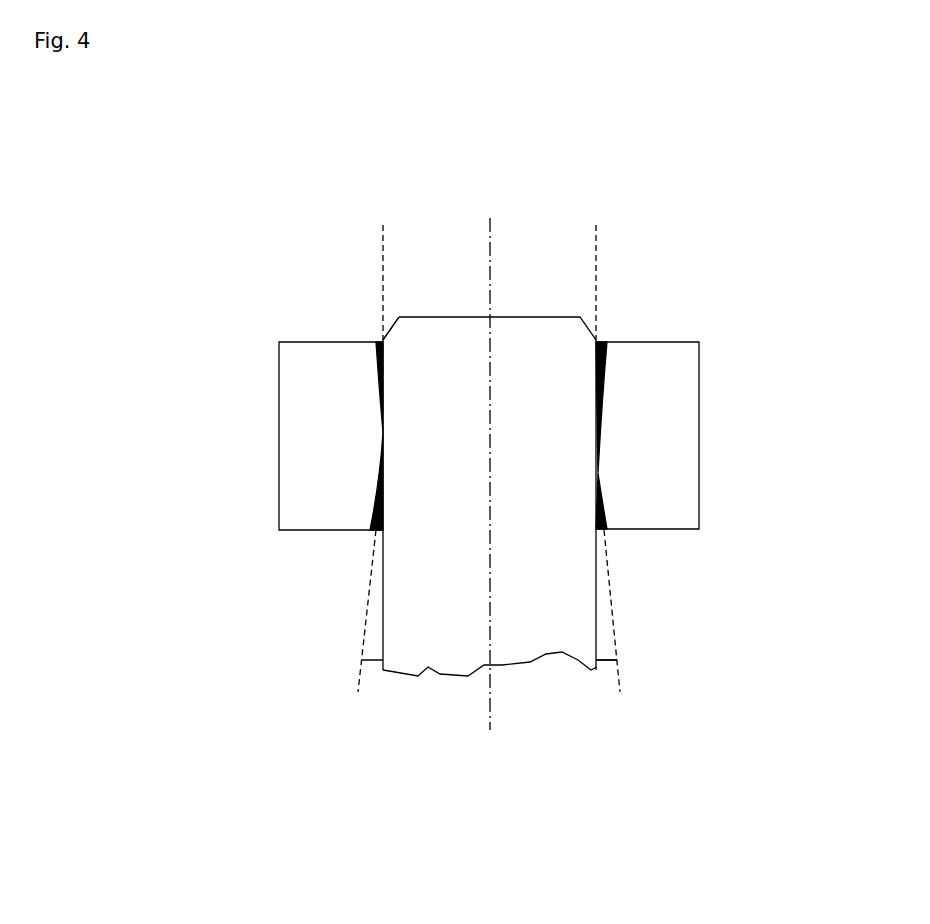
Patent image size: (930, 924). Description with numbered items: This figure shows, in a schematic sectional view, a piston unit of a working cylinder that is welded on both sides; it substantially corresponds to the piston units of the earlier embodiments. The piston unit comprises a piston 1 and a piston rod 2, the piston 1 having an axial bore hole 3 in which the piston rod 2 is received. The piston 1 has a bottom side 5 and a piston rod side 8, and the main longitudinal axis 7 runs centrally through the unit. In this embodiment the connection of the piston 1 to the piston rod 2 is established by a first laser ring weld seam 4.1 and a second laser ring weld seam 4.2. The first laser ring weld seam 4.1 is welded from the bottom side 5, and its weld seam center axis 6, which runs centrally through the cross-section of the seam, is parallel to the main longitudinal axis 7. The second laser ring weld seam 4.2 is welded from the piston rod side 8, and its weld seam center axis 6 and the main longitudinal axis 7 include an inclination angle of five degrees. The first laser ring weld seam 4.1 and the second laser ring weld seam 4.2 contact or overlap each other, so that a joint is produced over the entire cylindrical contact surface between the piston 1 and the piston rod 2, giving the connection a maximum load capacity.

The piston 1 is at (310, 373).
The piston rod 2 is at (557, 316).
The axial bore hole 3 is at (375, 328).
The first laser ring weld seam 4.1 is at (605, 372).
The second laser ring weld seam 4.2 is at (600, 502).
The bottom side 5 is at (667, 341).
The weld seam center axis 6 is at (610, 592).
The main longitudinal axis 7 is at (490, 265).
The piston rod side 8 is at (316, 542).